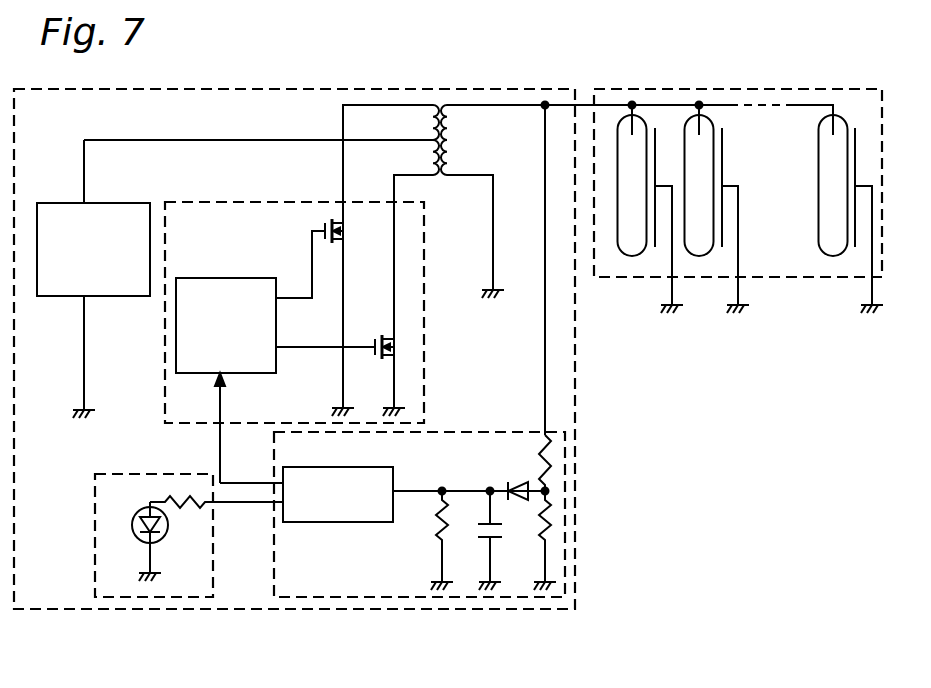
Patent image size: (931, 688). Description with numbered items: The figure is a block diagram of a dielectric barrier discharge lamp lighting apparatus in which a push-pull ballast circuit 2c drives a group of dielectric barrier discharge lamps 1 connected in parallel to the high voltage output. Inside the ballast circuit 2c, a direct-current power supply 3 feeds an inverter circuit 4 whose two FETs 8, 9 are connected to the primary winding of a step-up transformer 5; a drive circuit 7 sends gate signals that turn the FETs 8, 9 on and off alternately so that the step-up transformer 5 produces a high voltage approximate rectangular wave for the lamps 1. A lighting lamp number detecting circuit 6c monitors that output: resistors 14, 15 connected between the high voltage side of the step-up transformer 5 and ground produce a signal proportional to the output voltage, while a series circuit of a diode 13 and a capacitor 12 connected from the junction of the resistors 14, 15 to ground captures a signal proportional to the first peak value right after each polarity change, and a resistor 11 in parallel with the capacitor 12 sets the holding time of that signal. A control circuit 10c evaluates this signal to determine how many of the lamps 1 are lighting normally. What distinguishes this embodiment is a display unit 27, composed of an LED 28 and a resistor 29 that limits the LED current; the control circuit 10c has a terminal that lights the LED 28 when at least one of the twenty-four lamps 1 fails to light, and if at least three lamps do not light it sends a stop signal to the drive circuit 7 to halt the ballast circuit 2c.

The dielectric barrier discharge lamp 1 is at (722, 89).
The ballast circuit 2c is at (214, 89).
The direct-current power supply 3 is at (100, 203).
The inverter circuit 4 is at (258, 203).
The step-up transformer 5 is at (447, 178).
The lighting lamp number detecting circuit 6c is at (460, 433).
The drive circuit 7 is at (212, 278).
The FET 8 is at (310, 238).
The FET 9 is at (382, 334).
The control circuit 10c is at (395, 478).
The resistor 11 is at (433, 527).
The capacitor 12 is at (488, 545).
The diode 13 is at (510, 481).
The resistor 14 is at (536, 462).
The resistor 15 is at (538, 545).
The display unit 27 is at (135, 474).
The LED 28 is at (142, 545).
The resistor 29 is at (178, 512).